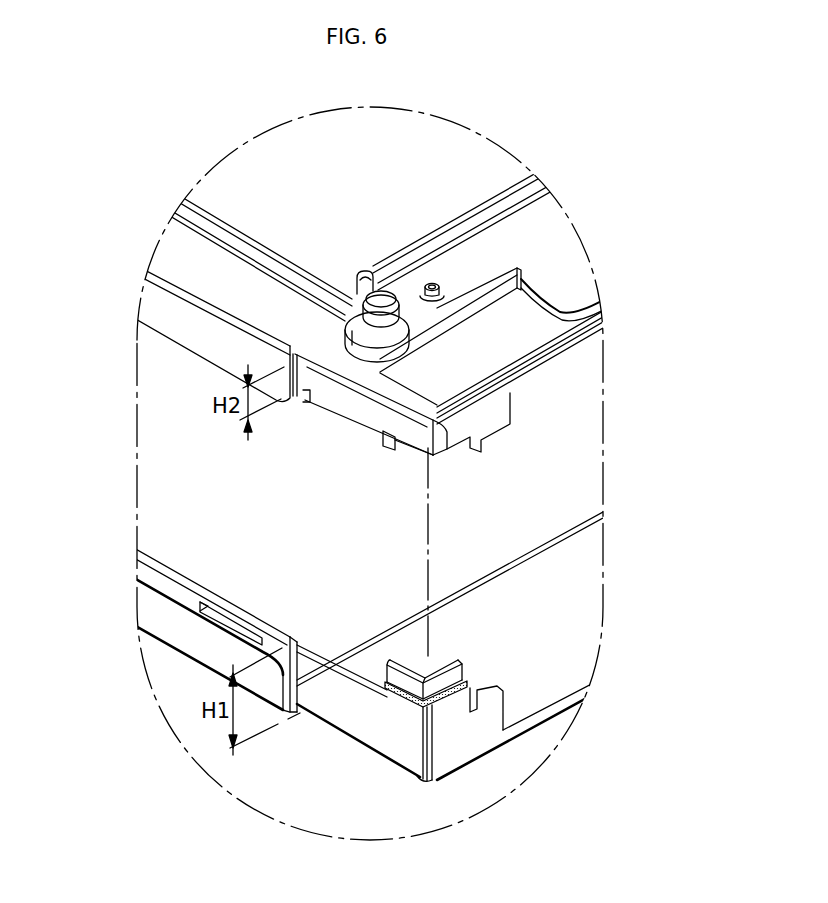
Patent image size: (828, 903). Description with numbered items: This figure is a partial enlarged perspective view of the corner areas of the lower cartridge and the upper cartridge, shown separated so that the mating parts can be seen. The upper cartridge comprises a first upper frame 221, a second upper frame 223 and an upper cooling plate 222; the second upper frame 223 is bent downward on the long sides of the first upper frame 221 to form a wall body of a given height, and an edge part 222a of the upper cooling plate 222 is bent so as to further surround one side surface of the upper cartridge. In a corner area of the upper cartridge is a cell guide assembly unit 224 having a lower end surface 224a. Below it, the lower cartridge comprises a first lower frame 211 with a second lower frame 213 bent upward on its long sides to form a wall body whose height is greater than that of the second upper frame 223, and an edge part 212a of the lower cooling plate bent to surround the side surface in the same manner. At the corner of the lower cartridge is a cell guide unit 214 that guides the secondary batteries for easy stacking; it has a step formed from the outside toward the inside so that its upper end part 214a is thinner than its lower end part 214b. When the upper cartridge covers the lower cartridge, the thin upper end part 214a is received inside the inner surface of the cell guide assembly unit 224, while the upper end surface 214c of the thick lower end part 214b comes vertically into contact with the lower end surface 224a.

The upper cooling plate 222 is at (460, 160).
The edge part of the upper cooling plate 222a is at (156, 303).
The first upper frame 221 is at (542, 342).
The second upper frame 223 is at (347, 403).
The cell guide assembly unit 224 is at (453, 440).
The lower end surface of the cell guide assembly unit 224a is at (407, 447).
The first lower frame 211 is at (584, 646).
The edge part of the lower cooling plate 212a is at (152, 611).
The second lower frame 213 is at (322, 706).
The cell guide unit 214 is at (336, 782).
The upper end part of the cell guide unit 214a is at (407, 684).
The lower end part of the cell guide unit 214b is at (447, 745).
The upper end surface of the lower end part 214c is at (450, 678).